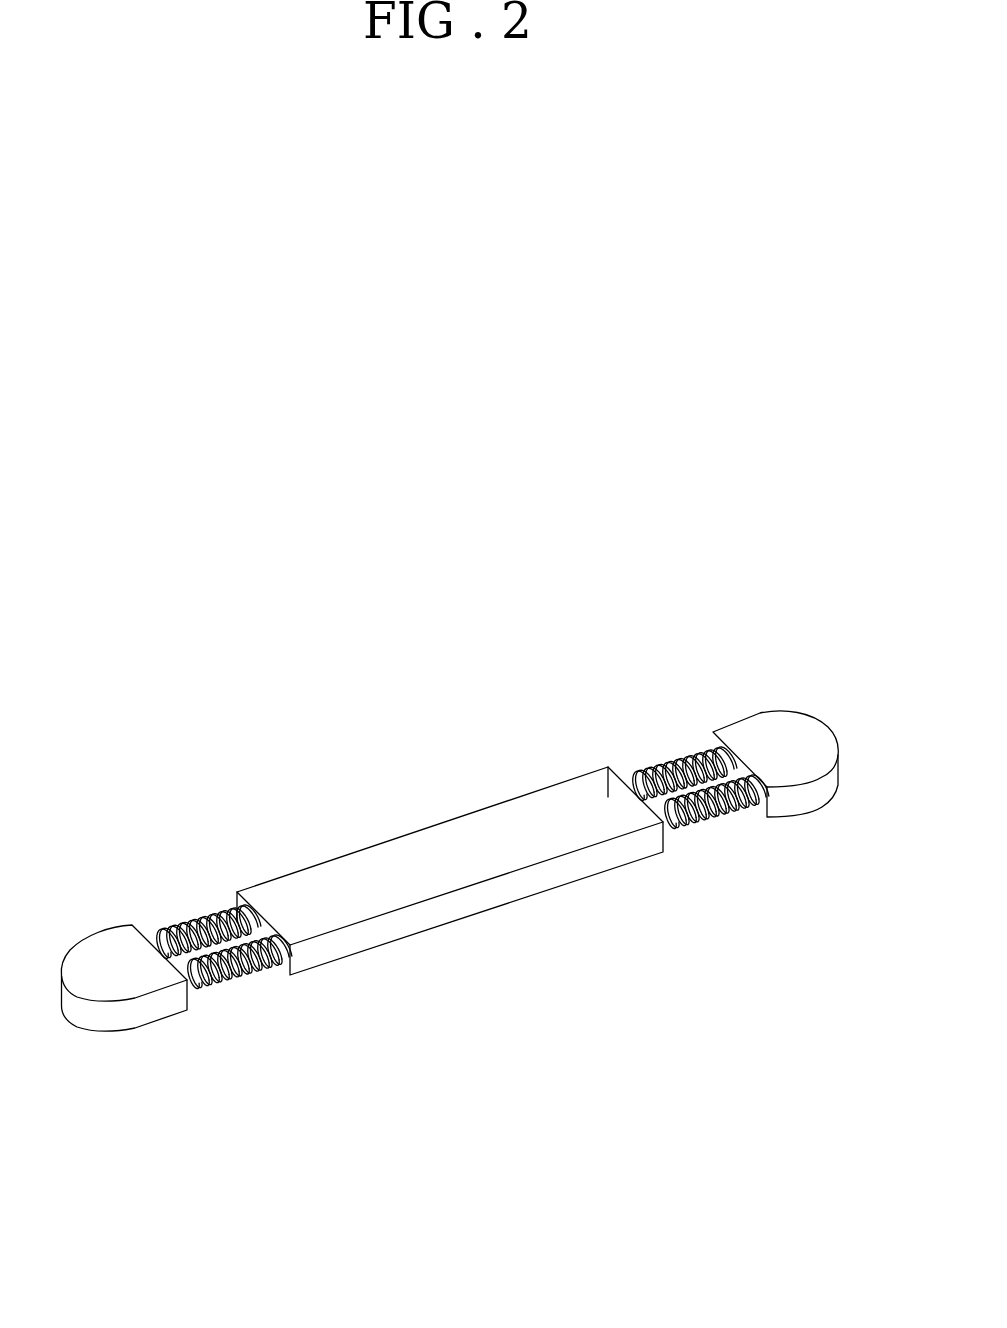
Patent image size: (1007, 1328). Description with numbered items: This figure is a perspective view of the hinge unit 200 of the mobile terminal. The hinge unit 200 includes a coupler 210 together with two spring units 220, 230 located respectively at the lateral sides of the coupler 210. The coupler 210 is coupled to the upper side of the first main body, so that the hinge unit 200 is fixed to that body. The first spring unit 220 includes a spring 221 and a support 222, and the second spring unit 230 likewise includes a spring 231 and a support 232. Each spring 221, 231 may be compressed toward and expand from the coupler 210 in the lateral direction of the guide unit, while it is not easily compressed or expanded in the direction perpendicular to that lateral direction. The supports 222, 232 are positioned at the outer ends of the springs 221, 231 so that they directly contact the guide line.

The hinge unit 200 is at (469, 893).
The coupler 210 is at (445, 840).
The spring unit 220 is at (197, 1060).
The spring 221 is at (243, 975).
The support 222 is at (147, 1033).
The spring unit 230 is at (755, 870).
The spring 231 is at (697, 820).
The support 232 is at (795, 795).